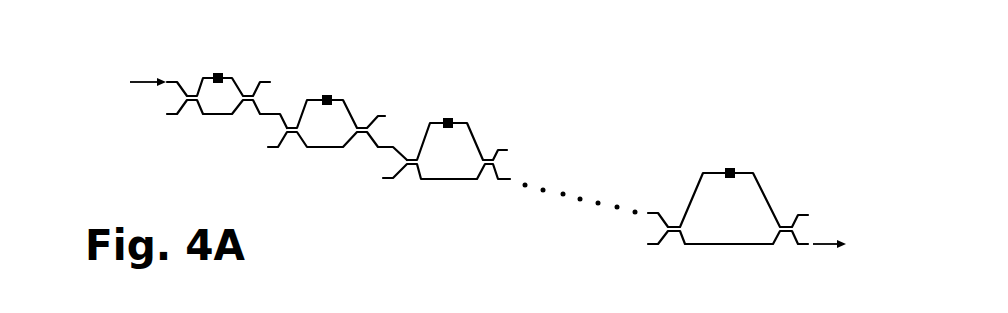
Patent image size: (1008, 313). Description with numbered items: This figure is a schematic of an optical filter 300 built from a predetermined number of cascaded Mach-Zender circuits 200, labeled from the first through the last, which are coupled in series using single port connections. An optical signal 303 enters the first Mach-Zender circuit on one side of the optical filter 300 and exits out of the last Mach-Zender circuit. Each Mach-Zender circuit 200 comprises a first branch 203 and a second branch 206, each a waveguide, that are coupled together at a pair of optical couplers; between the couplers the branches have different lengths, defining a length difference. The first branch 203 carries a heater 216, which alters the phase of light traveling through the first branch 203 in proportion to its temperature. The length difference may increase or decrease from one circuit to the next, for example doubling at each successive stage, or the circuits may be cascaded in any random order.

The optical filter 300 is at (643, 82).
The optical signal 303 is at (141, 70).
The Mach-Zender circuit 200 is at (441, 215).
The first branch 203 is at (490, 140).
The second branch 206 is at (416, 190).
The heater 216 is at (446, 118).